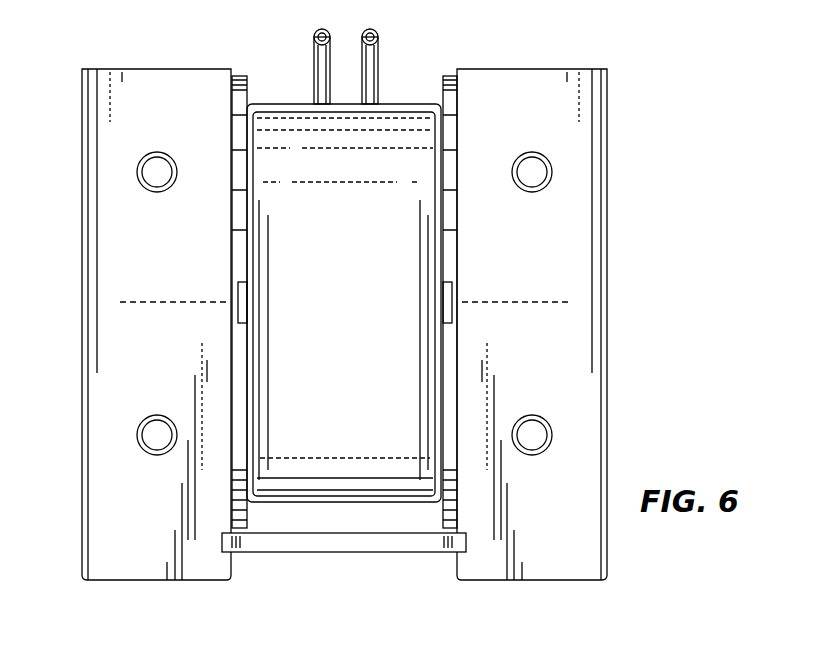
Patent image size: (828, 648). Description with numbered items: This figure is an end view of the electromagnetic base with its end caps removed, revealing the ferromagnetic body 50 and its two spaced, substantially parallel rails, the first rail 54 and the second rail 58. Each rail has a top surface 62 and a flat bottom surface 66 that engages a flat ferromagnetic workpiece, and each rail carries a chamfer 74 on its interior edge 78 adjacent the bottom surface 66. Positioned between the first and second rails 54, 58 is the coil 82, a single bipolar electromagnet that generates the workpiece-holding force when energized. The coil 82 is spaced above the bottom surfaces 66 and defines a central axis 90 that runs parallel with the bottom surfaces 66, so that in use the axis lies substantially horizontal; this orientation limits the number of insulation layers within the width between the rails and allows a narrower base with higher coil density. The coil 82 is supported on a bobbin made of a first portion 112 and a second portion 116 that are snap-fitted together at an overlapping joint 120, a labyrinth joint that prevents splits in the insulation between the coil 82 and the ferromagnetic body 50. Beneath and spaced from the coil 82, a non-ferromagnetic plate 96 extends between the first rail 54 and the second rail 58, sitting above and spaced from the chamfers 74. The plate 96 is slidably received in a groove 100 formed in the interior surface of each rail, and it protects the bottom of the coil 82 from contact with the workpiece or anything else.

The ferromagnetic body 50 is at (130, 232).
The first rail 54 is at (108, 290).
The second rail 58 is at (570, 240).
The top surface 62 is at (143, 68).
The bottom surface 66 is at (120, 580).
The chamfer 74 is at (229, 580).
The interior edge 78 is at (233, 576).
The coil 82 is at (397, 140).
The central axis 90 is at (553, 305).
The non-ferromagnetic plate 96 is at (360, 543).
The groove 100 is at (222, 543).
The first portion 112 is at (243, 506).
The second portion 116 is at (243, 97).
The overlapping joint 120 is at (452, 290).